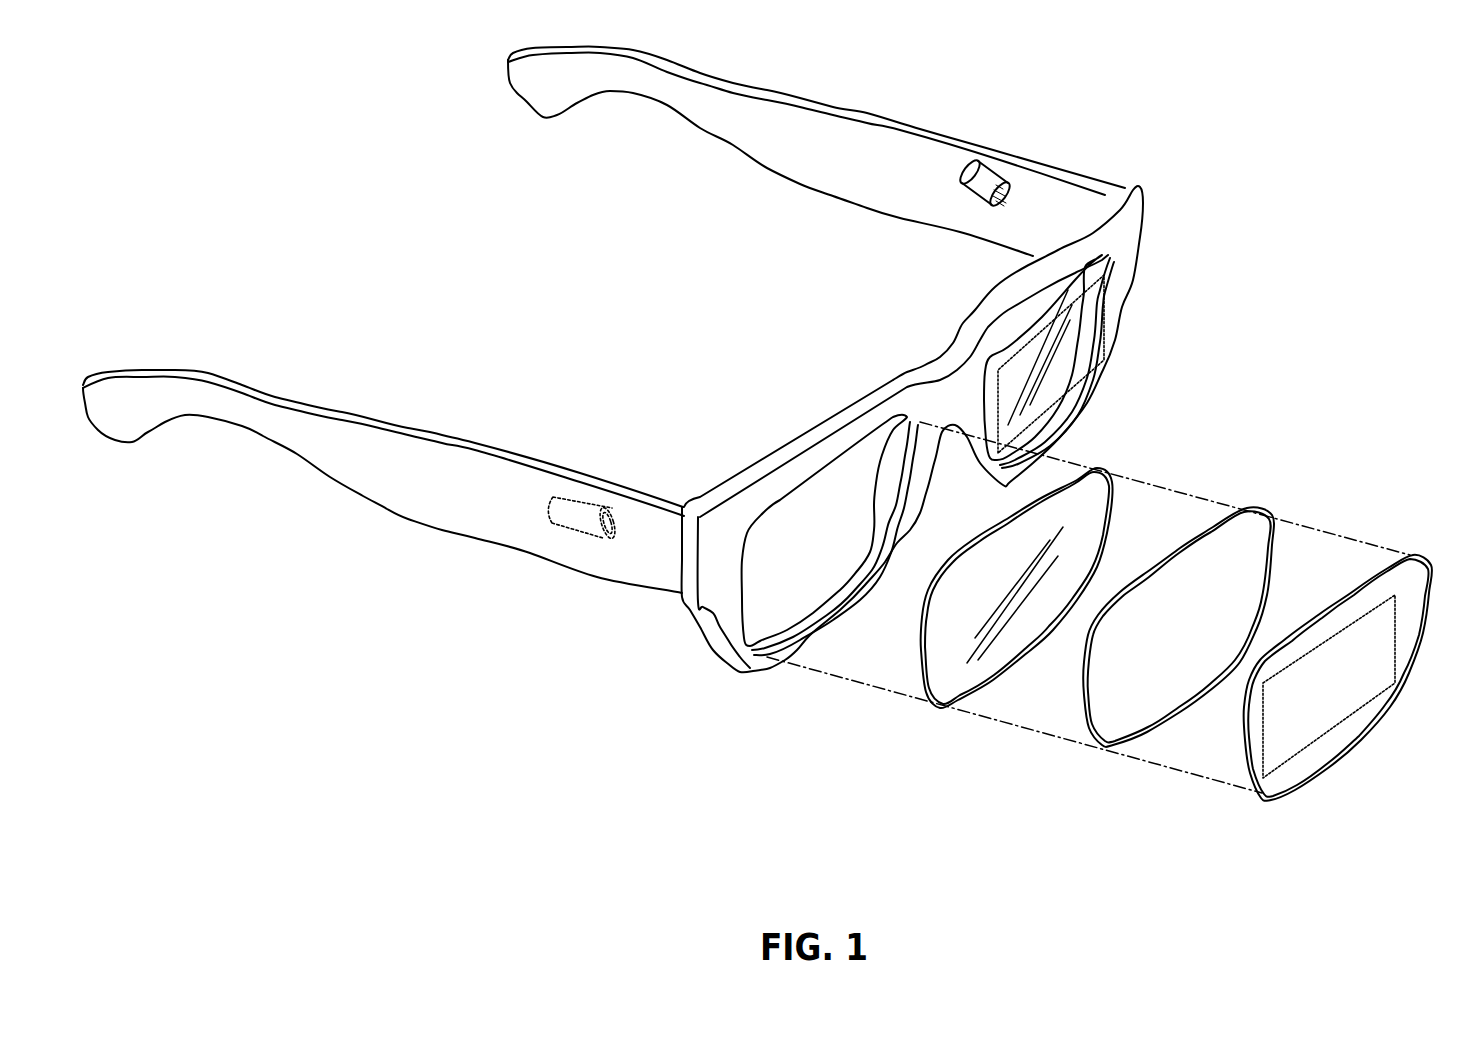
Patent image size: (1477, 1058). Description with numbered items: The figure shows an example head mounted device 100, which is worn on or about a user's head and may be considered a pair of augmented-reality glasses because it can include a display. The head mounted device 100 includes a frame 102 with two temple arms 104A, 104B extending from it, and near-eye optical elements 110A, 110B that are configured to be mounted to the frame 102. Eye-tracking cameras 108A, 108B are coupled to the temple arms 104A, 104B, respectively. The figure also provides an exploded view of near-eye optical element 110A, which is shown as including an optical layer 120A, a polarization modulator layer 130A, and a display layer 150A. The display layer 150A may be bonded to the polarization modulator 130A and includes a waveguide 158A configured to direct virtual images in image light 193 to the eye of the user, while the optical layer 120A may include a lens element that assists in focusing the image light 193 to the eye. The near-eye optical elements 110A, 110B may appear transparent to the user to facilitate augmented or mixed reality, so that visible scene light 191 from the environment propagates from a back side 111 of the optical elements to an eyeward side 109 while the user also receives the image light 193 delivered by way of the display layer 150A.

The head mounted device 100 is at (1357, 106).
The frame 102 is at (958, 410).
The temple arm 104A is at (488, 511).
The temple arm 104B is at (855, 160).
The eye-tracking camera 108A is at (578, 510).
The eye-tracking camera 108B is at (1002, 170).
The eyeward side 109 is at (742, 408).
The near-eye optical element 110A is at (1177, 678).
The near-eye optical element 110B is at (1102, 350).
The back side 111 is at (1385, 775).
The optical layer 120A is at (940, 707).
The polarization modulator layer 130A is at (1100, 747).
The display layer 150A is at (1338, 706).
The waveguide 158A is at (1275, 681).
The scene light 191 is at (1157, 418).
The image light 193 is at (1387, 643).